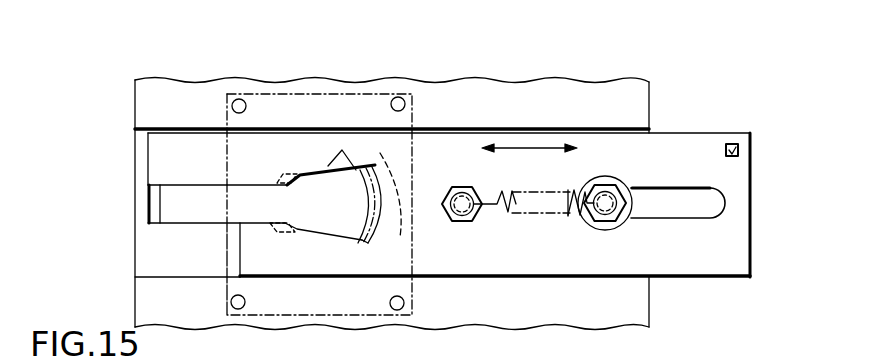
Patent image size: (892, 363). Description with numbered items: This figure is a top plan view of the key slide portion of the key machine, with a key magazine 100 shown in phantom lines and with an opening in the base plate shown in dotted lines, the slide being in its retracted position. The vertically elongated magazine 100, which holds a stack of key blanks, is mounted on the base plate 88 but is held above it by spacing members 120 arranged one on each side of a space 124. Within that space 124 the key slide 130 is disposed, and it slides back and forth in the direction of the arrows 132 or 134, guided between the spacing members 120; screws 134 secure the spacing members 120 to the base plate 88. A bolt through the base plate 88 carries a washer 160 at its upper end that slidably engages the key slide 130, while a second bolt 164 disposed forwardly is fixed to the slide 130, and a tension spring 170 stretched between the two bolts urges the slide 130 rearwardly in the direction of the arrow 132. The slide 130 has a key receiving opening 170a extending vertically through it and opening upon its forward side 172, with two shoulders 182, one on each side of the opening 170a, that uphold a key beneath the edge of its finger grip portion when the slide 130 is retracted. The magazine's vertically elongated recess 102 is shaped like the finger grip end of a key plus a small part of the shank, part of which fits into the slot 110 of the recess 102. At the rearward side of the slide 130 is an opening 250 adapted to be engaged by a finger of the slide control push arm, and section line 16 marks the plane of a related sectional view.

The base plate 88 is at (642, 105).
The key magazine 100 is at (413, 118).
The vertically elongated recess 102 is at (270, 231).
The slot 110 is at (190, 357).
The spacing members 120 is at (414, 121).
The space 124 is at (424, 128).
The key slide 130 is at (675, 143).
The arrow 132 is at (506, 151).
The screws 134 is at (393, 97).
The washer 160 is at (628, 187).
The bolt 164 is at (463, 362).
The spring 170 is at (535, 348).
The key receiving opening 170a is at (343, 187).
The forward side 172 is at (147, 143).
The shoulder 182 is at (299, 182).
The opening 250 is at (735, 142).
The section line 16 is at (95, 203).